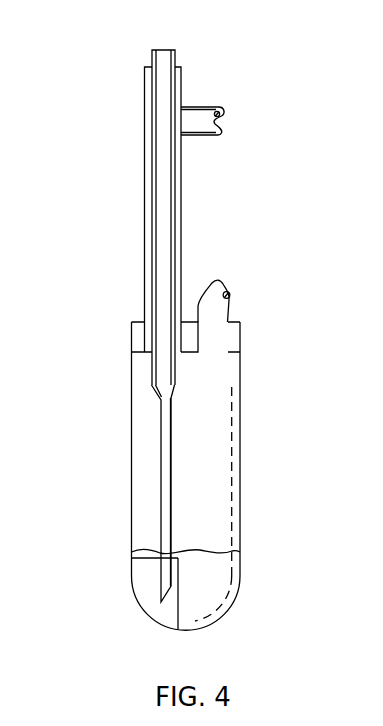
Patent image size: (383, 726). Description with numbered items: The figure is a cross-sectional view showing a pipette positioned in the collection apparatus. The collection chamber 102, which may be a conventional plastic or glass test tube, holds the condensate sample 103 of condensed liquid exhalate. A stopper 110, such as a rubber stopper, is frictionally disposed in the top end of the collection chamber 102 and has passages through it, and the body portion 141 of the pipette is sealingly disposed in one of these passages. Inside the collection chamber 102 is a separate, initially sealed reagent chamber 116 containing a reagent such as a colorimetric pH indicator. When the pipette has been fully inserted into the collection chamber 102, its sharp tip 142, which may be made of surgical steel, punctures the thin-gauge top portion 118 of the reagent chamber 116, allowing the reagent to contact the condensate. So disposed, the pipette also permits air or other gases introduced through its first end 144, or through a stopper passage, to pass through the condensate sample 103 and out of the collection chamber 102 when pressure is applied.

The collection chamber 102 is at (132, 422).
The condensate sample 103 is at (220, 555).
The stopper 110 is at (137, 333).
The reagent chamber 116 is at (143, 578).
The top portion 118 is at (147, 553).
The body portion 141 is at (181, 178).
The tip 142 is at (172, 592).
The first end 144 is at (163, 50).